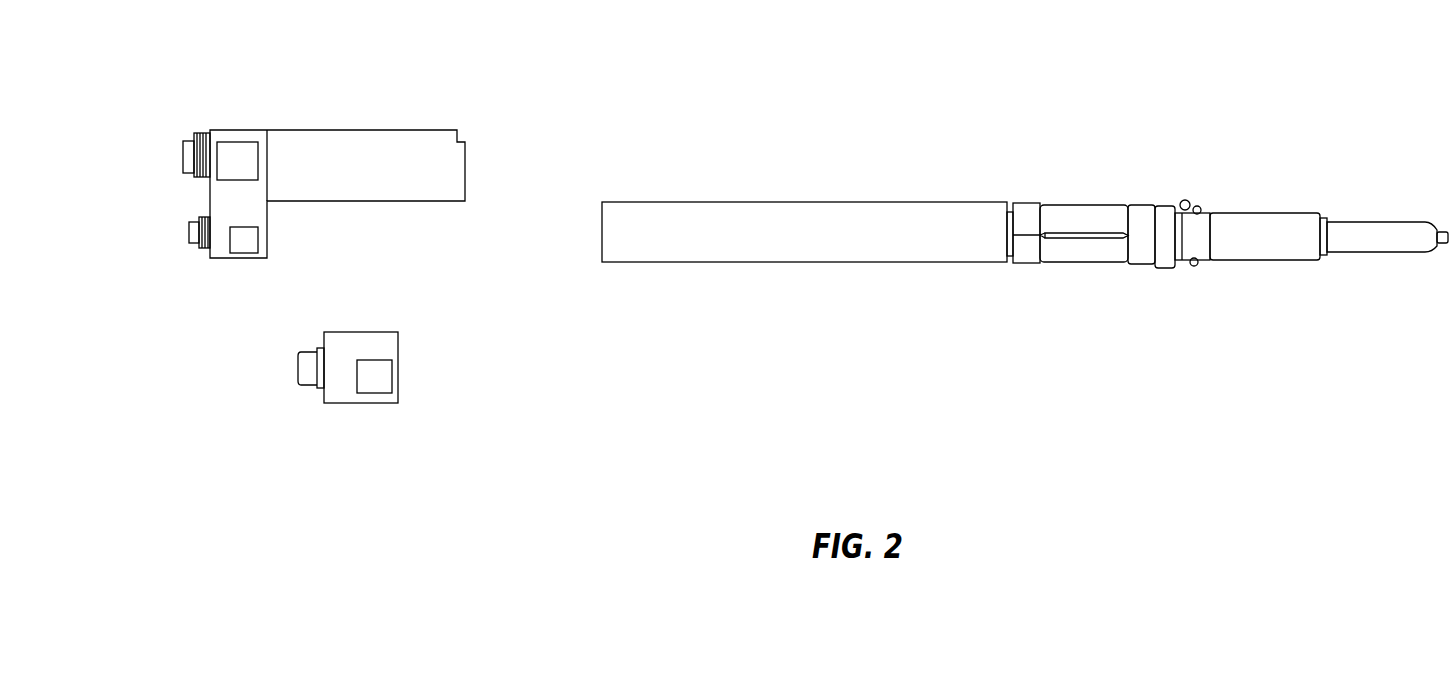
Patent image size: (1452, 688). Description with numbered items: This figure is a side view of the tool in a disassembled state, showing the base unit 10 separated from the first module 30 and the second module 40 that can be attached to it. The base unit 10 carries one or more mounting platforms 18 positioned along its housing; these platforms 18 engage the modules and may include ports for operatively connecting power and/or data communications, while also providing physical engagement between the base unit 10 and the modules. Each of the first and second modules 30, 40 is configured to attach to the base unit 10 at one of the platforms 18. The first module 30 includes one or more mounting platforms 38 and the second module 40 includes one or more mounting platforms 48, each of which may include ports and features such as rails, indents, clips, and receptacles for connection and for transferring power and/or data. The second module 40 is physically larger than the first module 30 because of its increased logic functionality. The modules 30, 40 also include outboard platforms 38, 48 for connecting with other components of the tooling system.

The base unit 10 is at (1016, 188).
The mounting platform 18 is at (715, 202).
The first module 30 is at (350, 403).
The mounting platform 38 is at (298, 371).
The second module 40 is at (306, 130).
The mounting platform 48 is at (183, 157).